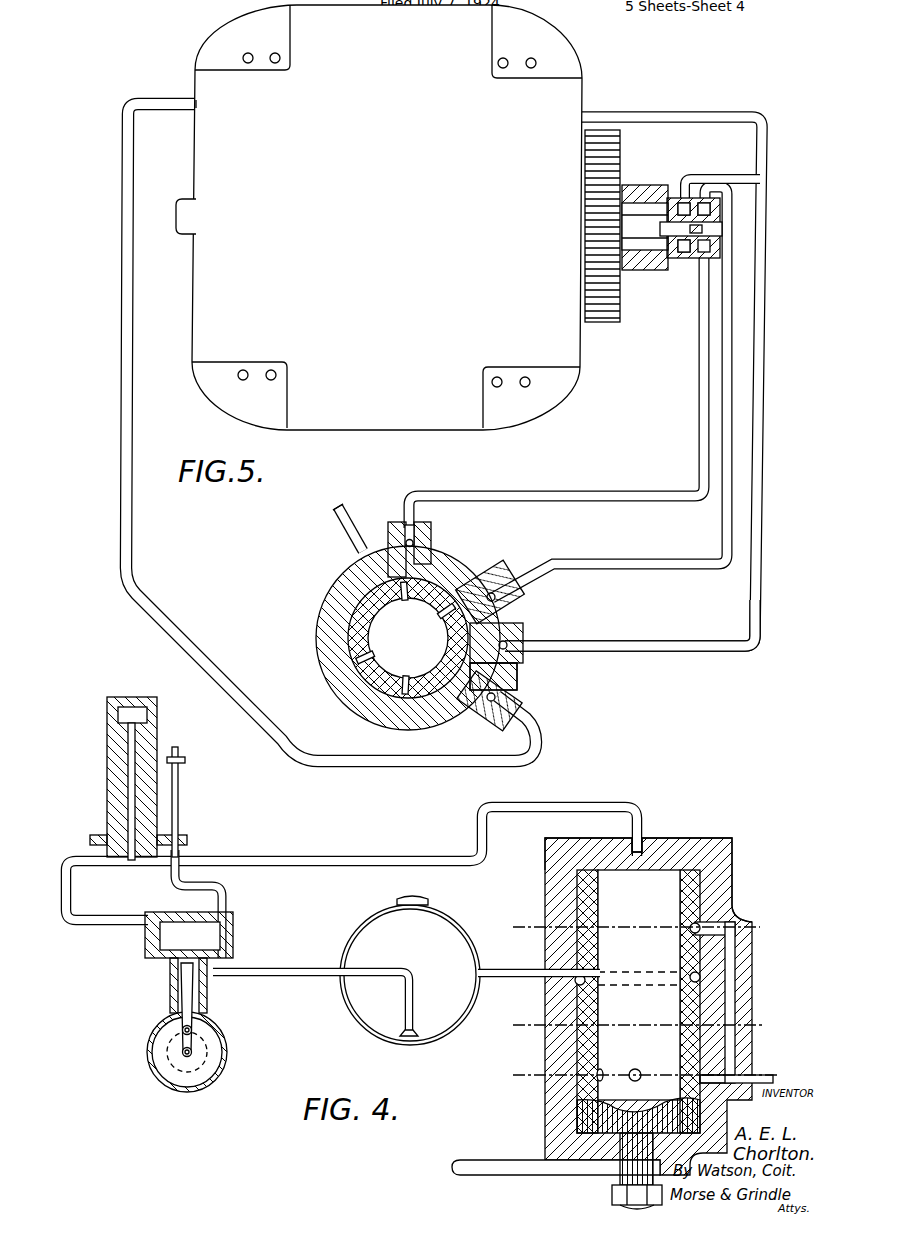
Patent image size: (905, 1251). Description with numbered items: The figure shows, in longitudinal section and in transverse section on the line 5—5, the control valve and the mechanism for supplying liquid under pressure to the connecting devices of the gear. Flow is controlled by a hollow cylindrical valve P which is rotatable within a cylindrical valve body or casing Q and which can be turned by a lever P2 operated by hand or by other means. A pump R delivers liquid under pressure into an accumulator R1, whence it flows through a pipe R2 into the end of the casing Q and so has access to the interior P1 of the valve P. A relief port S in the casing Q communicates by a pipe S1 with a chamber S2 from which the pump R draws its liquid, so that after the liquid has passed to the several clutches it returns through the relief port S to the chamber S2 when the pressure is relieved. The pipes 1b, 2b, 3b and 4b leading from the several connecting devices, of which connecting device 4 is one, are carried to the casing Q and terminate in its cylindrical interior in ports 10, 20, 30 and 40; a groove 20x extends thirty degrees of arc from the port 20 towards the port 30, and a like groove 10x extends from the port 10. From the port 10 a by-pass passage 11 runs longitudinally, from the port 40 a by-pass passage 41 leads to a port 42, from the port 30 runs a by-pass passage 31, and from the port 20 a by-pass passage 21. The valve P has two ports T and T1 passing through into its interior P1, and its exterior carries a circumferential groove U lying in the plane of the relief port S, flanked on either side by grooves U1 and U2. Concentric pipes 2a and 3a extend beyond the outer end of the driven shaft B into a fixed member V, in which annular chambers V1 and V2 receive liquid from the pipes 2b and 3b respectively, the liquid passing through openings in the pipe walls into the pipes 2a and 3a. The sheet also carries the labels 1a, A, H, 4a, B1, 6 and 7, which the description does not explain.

In FIG. 5, the pipe connection 1a is at (196, 104).
In FIG. 5, the boss A is at (184, 222).
In FIG. 5, the housing H is at (387, 217).
In FIG. 5, the pipe 4a is at (590, 117).
In FIG. 5, the driven shaft B is at (638, 213).
In FIG. 5, the pipe 2a is at (664, 228).
In FIG. 5, the fixed member V is at (699, 198).
In FIG. 5, the annular chamber V1 is at (714, 204).
In FIG. 5, the annular chamber V2 is at (685, 258).
In FIG. 5, the pipe 3a is at (663, 240).
In FIG. 5, the gear B1 is at (602, 305).
In FIG. 5, the pipe 3b is at (728, 330).
In FIG. 5, the pipe 2b is at (700, 370).
In FIG. 5, the connecting device 4 is at (338, 510).
In FIG. 5, the port 20 is at (388, 522).
In FIG. 5, the by-pass passage 21 is at (423, 522).
In FIG. 5, the groove 20x is at (430, 576).
In FIG. 5, the port 30 is at (465, 598).
In FIG. 5, the by-pass passage 31 is at (496, 592).
In FIG. 5, the port 40 is at (502, 638).
In FIG. 4, the port 40 is at (703, 1082).
In FIG. 5, the pipe S1 is at (343, 533).
In FIG. 4, the pipe S1 is at (489, 979).
In FIG. 5, the hollow cylindrical valve P is at (356, 605).
In FIG. 4, the hollow cylindrical valve P is at (574, 1086).
In FIG. 5, the interior of the valve P1 is at (408, 638).
In FIG. 4, the interior of the valve P1 is at (664, 886).
In FIG. 5, the port T1 is at (356, 672).
In FIG. 4, the port T1 is at (602, 1070).
In FIG. 5, the valve body or casing Q is at (353, 694).
In FIG. 4, the valve body or casing Q is at (714, 870).
In FIG. 5, the port T is at (405, 698).
In FIG. 4, the port T is at (637, 1069).
In FIG. 5, the groove 10x is at (455, 703).
In FIG. 5, the by-pass passage 11 is at (497, 707).
In FIG. 5, the by-pass passage 41 is at (522, 657).
In FIG. 4, the by-pass passage 41 is at (736, 967).
In FIG. 5, the port 10 is at (520, 678).
In FIG. 5, the pipe 4b is at (662, 650).
In FIG. 4, the pipe 4b is at (763, 1072).
In FIG. 5, the pipe 1b is at (228, 704).
In FIG. 4, the accumulator R1 is at (159, 716).
In FIG. 4, the pipe R2 is at (417, 862).
In FIG. 4, the pump R is at (170, 978).
In FIG. 4, the chamber S2 is at (342, 1015).
In FIG. 4, the relief port S is at (566, 968).
In FIG. 4, the port 42 is at (713, 925).
In FIG. 4, the groove U2 is at (578, 925).
In FIG. 4, the section line 7 is at (636, 927).
In FIG. 4, the groove U is at (702, 978).
In FIG. 4, the groove U1 is at (598, 1018).
In FIG. 4, the section line 6 is at (636, 1025).
In FIG. 4, the section line 5 is at (644, 1074).
In FIG. 4, the lever P2 is at (481, 1166).